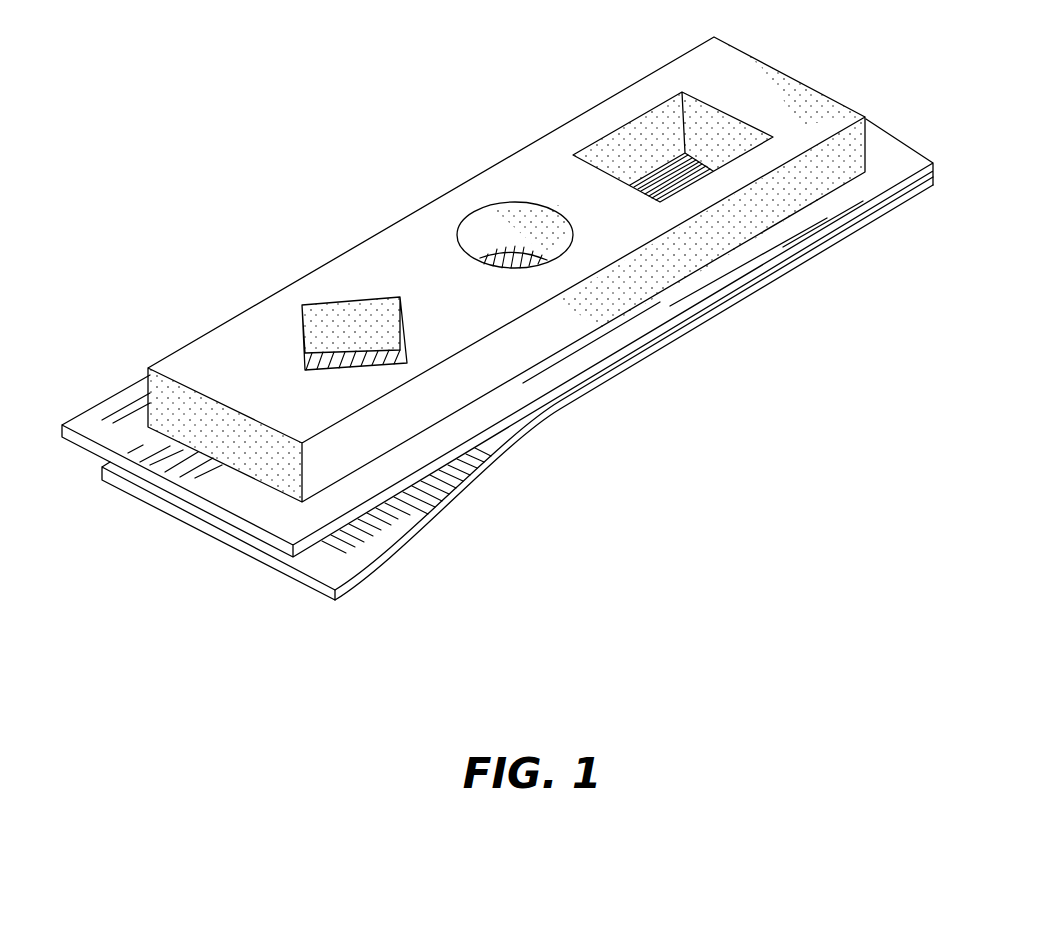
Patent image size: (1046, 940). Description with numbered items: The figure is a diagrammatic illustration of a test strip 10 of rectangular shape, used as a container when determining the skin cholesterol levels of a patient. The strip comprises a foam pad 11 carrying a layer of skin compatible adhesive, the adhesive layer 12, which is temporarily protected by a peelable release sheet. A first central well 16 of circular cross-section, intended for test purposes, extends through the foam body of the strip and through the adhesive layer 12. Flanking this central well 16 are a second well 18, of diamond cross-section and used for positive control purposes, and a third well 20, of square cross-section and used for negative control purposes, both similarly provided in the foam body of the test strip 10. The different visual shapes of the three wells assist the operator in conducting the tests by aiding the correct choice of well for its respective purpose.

The test strip 10 is at (277, 510).
The foam pad 11 is at (810, 113).
The adhesive layer 12 is at (343, 560).
The first central well 16 is at (483, 228).
The second well 18 is at (330, 327).
The third well 20 is at (645, 137).